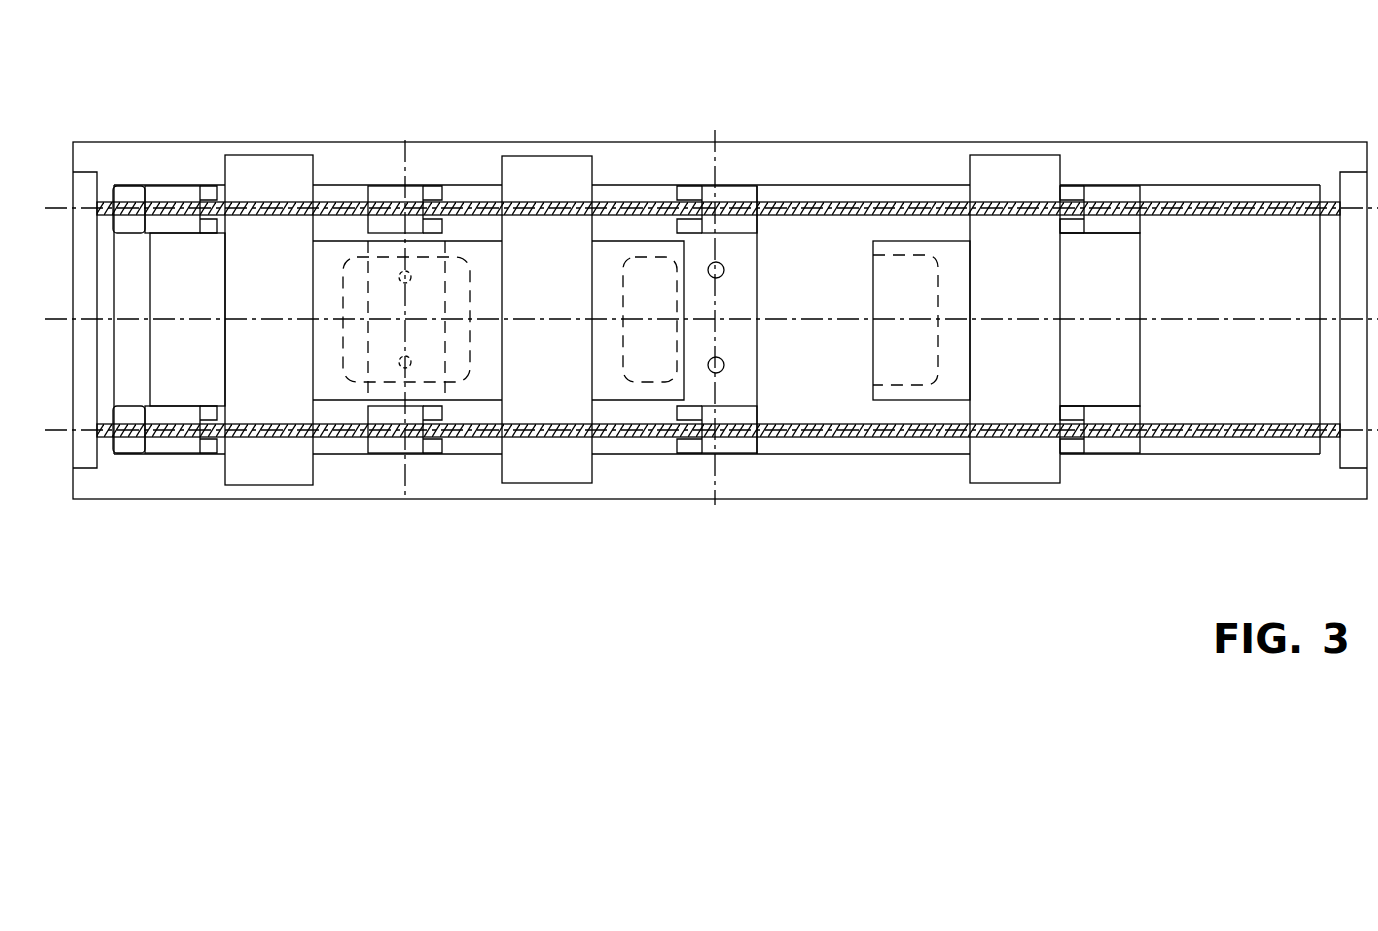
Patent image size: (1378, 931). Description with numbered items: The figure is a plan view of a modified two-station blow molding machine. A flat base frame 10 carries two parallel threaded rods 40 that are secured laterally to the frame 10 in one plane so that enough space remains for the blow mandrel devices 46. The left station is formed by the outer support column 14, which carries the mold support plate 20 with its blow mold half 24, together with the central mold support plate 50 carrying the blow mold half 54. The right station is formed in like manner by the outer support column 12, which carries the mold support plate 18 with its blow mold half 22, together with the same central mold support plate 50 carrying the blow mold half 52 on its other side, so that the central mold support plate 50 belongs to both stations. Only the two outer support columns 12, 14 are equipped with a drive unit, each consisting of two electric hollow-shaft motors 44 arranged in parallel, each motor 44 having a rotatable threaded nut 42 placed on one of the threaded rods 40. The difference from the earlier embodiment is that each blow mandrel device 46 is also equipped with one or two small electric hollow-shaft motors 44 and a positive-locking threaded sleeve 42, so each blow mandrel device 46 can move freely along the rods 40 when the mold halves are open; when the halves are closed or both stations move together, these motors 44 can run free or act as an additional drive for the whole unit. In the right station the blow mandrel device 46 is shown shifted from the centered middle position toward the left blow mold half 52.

The frame 10 is at (1244, 162).
The support column 12 is at (1108, 287).
The support column 14 is at (170, 378).
The mold support plate 18 is at (1000, 185).
The mold support plate 20 is at (284, 192).
The blow mold half 22 is at (910, 285).
The blow mold half 24 is at (353, 308).
The threaded rod 40 is at (818, 204).
The threaded nut 42 is at (226, 197).
The electric hollow-shaft motor 44 is at (177, 196).
The blow mandrel device 46 is at (730, 303).
The central mold support plate 50 is at (560, 467).
The blow mold half 52 is at (637, 277).
The blow mold half 54 is at (462, 288).